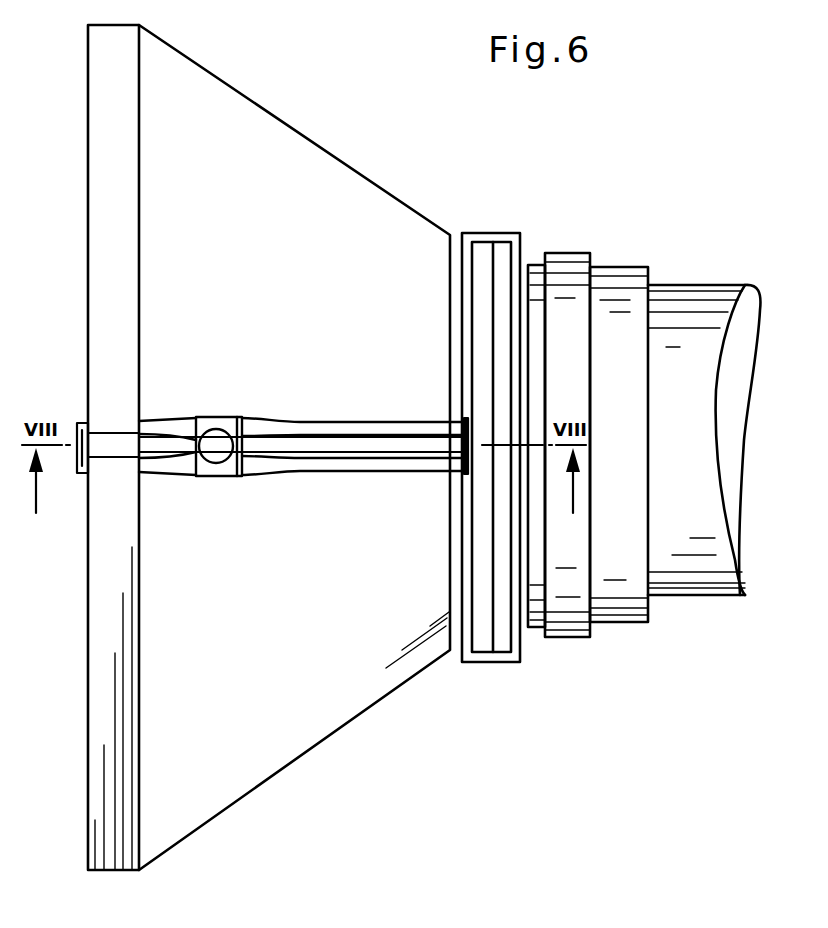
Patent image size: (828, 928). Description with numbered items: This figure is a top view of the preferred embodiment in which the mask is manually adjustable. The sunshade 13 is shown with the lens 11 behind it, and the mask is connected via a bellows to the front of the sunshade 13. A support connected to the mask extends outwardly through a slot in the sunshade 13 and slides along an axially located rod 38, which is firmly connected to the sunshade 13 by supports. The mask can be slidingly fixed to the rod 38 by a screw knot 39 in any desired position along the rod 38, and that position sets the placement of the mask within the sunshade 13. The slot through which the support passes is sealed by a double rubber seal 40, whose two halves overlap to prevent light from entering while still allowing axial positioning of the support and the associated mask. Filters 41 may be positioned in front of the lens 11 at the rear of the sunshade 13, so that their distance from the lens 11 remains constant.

The lens 11 is at (576, 247).
The sunshade 13 is at (296, 130).
The rod 38 is at (123, 450).
The screw knot 39 is at (221, 432).
The double rubber seal 40 is at (164, 424).
The filters 41 is at (483, 250).